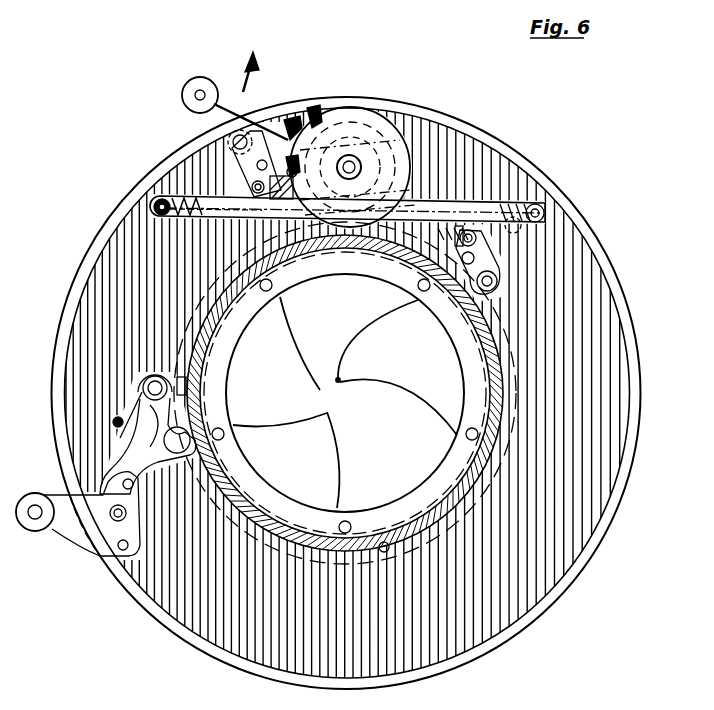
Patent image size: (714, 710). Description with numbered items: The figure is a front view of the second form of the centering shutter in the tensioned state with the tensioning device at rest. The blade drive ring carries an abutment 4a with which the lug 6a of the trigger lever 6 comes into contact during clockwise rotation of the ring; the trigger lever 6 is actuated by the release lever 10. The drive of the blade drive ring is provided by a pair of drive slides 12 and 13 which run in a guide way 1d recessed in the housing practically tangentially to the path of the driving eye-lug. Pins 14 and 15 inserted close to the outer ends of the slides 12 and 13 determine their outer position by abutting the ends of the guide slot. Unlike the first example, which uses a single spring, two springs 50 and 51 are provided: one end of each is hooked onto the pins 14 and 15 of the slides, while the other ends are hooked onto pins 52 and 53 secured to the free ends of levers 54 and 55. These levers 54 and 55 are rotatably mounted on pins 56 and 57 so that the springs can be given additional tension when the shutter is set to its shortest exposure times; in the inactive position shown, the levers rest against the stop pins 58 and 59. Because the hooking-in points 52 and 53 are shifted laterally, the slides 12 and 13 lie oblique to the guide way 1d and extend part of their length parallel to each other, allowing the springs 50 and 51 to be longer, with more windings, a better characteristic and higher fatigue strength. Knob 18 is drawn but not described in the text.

The guide way 1d is at (170, 219).
The abutment 4a is at (213, 455).
The trigger lever 6 is at (135, 457).
The lug 6a is at (202, 427).
The release lever 10 is at (43, 530).
The slide 12 is at (240, 233).
The slide 13 is at (451, 210).
The pin 14 is at (154, 203).
The pin 15 is at (546, 210).
The knob 18 is at (197, 80).
The spring 50 is at (213, 208).
The spring 51 is at (291, 170).
The pin 52 is at (440, 265).
The pin 53 is at (252, 183).
The lever 54 is at (256, 163).
The lever 55 is at (400, 258).
The pin 56 is at (240, 133).
The pin 57 is at (475, 296).
The stop pin 58 is at (263, 157).
The stop pin 59 is at (467, 264).